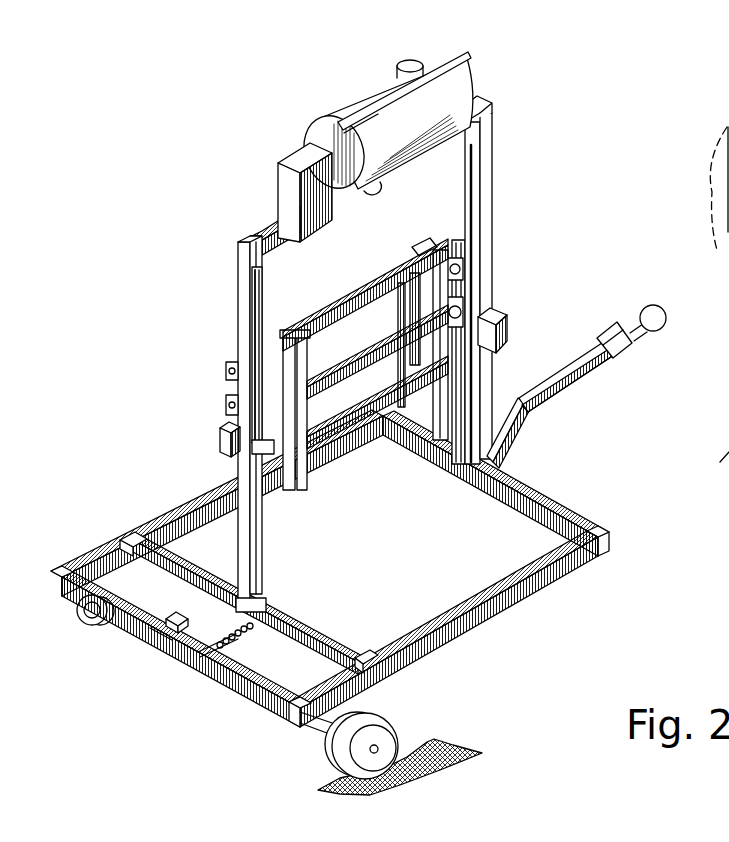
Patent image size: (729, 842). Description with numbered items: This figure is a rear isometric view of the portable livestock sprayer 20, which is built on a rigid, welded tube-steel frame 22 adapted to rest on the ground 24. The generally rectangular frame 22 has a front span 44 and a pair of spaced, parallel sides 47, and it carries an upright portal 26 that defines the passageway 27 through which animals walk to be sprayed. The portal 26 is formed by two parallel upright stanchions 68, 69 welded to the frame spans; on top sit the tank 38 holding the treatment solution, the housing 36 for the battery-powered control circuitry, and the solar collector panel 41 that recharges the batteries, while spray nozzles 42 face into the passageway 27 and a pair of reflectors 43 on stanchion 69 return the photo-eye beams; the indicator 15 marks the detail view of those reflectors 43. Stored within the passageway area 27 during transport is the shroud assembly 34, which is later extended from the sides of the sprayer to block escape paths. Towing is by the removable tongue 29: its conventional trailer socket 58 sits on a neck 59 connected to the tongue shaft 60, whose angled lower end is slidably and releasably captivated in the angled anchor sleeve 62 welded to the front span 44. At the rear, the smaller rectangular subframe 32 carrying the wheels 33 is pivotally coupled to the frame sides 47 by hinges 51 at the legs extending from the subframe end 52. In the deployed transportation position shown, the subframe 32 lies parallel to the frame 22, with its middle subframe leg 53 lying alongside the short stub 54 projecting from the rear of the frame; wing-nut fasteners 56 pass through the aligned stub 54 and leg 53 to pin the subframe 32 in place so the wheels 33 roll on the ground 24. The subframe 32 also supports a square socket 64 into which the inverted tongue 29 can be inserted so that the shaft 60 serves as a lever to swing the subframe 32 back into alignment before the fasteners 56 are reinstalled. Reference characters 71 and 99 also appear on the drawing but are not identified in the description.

The portable sprayer 20 is at (366, 420).
The rigid frame 22 is at (341, 587).
The ground 24 is at (428, 742).
The upright portal 26 is at (216, 409).
The passageway 27 is at (499, 280).
The removable tongue 29 is at (591, 359).
The subframe 32 is at (226, 704).
The wheels 33 is at (389, 706).
The shroud assembly 34 is at (349, 473).
The housing 36 is at (291, 183).
The tank 38 is at (409, 142).
The solar collector panel 41 is at (470, 67).
The spray nozzles 42 is at (378, 193).
The reflectors 43 is at (508, 320).
The front span 44 is at (571, 520).
The frame sides 47 is at (455, 628).
The hinges 51 is at (141, 532).
The subframe end 52 is at (117, 624).
The middle subframe leg 53 is at (196, 655).
The stub 54 is at (215, 605).
The fasteners 56 is at (246, 640).
The trailer socket 58 is at (652, 307).
The neck 59 is at (636, 347).
The tongue shaft 60 is at (553, 378).
The anchor sleeve 62 is at (523, 430).
The square socket 64 is at (152, 628).
The stanchion 68 is at (250, 318).
The stanchion 69 is at (483, 148).
The stop block 71 is at (230, 427).
The frame corner 99 is at (98, 560).
The rotation direction of carriage 15 is at (470, 262).